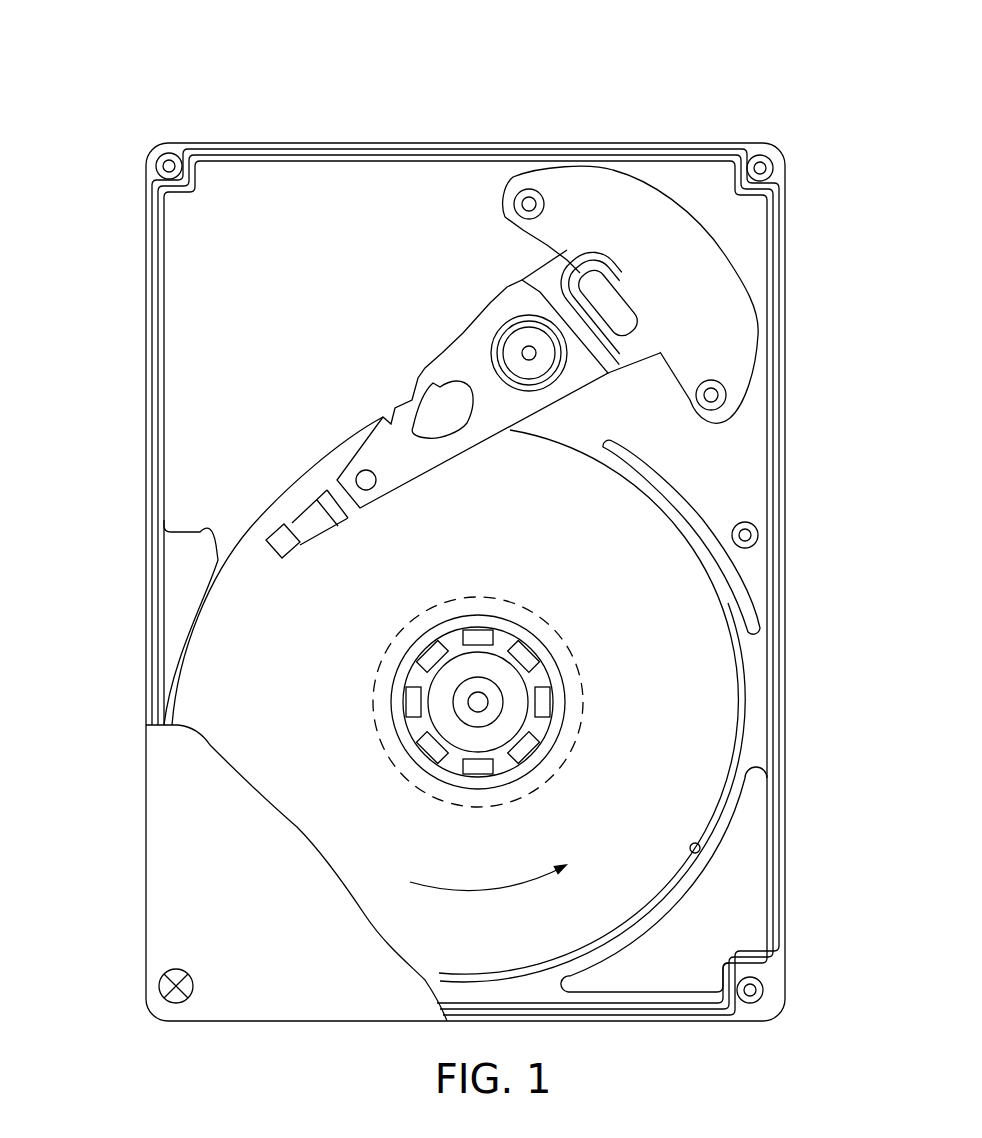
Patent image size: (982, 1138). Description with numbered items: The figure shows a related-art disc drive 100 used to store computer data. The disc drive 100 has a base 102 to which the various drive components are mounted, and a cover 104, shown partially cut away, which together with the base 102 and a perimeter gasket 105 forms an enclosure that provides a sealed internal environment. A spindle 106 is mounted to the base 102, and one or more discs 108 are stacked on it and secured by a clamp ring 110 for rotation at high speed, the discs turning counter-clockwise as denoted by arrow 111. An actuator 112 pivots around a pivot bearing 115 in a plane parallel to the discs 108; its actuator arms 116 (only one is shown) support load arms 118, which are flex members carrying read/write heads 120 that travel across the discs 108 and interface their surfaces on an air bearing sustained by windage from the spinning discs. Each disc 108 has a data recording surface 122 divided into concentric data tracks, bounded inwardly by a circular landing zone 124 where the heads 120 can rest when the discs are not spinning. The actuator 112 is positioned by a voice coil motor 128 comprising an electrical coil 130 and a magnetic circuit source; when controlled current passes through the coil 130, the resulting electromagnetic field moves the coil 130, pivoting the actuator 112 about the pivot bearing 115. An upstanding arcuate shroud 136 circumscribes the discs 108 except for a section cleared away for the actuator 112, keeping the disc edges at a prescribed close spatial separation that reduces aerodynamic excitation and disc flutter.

The disc drive 100 is at (179, 64).
The base 102 is at (197, 247).
The cover 104 is at (173, 828).
The perimeter gasket 105 is at (745, 143).
The spindle 106 is at (498, 723).
The disc 108 is at (735, 665).
The clamp ring 110 is at (538, 680).
The arrow 111 is at (460, 890).
The actuator 112 is at (510, 282).
The pivot bearing 115 is at (528, 353).
The actuator arm 116 is at (420, 478).
The load arm 118 is at (316, 522).
The read/write head 120 is at (267, 543).
The data recording surface 122 is at (690, 790).
The circular landing zone 124 is at (383, 745).
The voice coil motor 128 is at (590, 172).
The electrical coil 130 is at (590, 270).
The arcuate shroud 136 is at (215, 563).